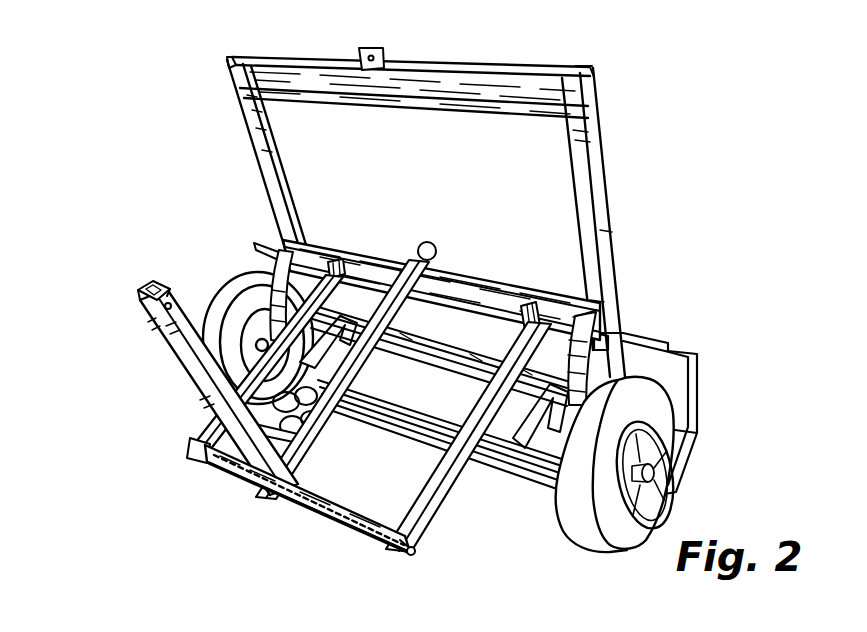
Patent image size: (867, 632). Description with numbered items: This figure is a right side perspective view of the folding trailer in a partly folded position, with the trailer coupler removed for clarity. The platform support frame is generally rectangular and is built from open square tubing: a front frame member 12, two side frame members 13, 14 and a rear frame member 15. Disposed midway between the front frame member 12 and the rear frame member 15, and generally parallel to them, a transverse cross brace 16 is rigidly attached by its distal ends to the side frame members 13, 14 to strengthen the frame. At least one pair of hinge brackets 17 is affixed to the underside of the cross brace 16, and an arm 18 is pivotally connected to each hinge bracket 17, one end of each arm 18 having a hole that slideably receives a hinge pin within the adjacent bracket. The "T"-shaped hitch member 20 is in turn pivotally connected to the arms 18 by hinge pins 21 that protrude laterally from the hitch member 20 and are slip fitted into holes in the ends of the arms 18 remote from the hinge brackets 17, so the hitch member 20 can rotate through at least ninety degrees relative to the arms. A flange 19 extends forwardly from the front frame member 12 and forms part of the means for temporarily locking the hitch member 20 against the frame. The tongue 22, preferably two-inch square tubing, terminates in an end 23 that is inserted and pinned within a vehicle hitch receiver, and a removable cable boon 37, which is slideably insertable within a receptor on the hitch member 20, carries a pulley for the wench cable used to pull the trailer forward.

The front frame member 12 is at (521, 67).
The side frame member 13 is at (244, 117).
The side frame member 14 is at (606, 176).
The rear frame member 15 is at (498, 470).
The transverse cross brace 16 is at (483, 282).
The hinge bracket 17 is at (332, 262).
The arm 18 is at (189, 440).
The flange 19 is at (377, 50).
The "T"-shaped hitch member 20 is at (312, 504).
The hinge pin 21 is at (414, 554).
The tongue 22 is at (163, 343).
The end of the tongue 23 is at (154, 283).
The removable cable boon 37 is at (424, 246).